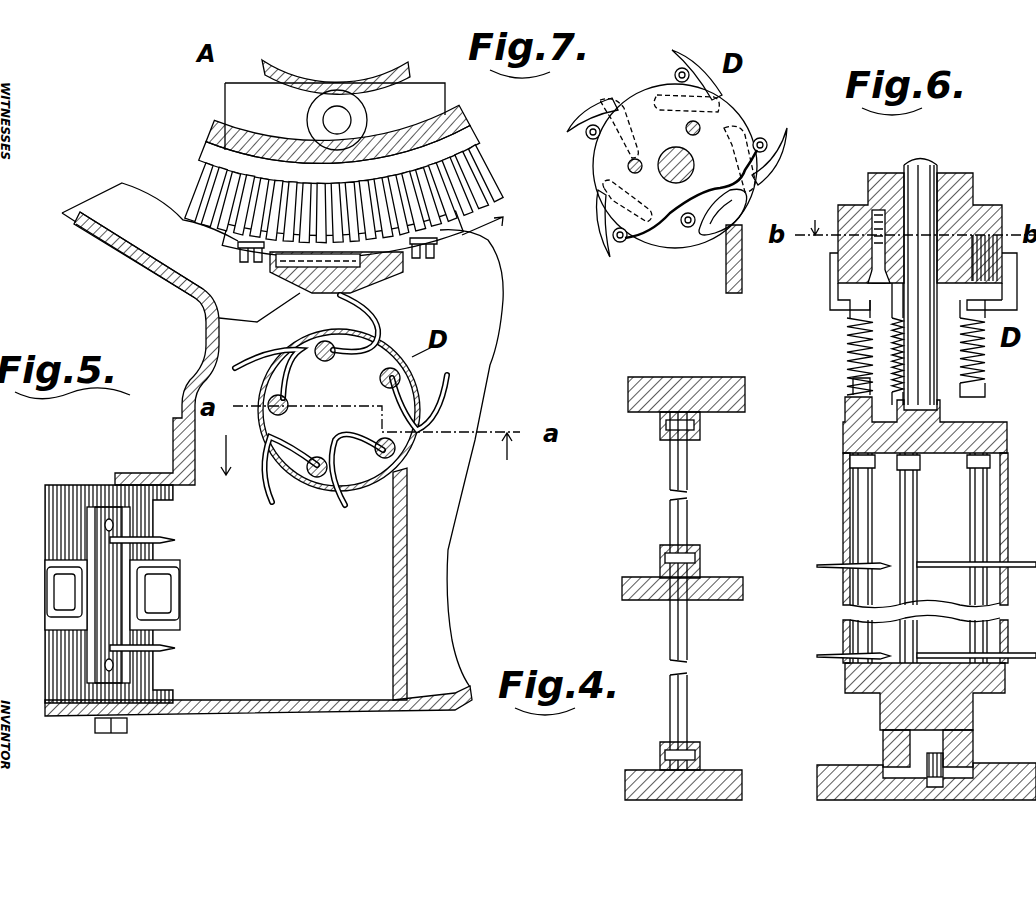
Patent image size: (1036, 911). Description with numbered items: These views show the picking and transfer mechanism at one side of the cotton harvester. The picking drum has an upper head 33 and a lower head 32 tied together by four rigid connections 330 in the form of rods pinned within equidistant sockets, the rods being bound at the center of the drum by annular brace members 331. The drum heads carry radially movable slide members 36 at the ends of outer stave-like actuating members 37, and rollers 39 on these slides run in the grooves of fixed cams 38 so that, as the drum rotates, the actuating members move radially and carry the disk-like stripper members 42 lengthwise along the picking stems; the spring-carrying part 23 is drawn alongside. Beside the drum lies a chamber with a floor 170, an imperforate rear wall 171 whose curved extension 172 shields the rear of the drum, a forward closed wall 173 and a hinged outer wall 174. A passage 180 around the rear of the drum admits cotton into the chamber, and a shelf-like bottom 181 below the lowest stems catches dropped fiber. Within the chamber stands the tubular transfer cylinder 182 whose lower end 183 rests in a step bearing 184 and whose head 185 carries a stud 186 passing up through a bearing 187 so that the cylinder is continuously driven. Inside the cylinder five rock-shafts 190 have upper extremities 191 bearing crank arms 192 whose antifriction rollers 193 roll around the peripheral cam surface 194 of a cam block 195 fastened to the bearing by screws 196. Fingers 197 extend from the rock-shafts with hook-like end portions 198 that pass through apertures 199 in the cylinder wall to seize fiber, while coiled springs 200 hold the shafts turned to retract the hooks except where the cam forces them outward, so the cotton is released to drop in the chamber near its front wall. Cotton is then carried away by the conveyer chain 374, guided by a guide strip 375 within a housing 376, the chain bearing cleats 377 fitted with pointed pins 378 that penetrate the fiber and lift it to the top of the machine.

In FIG. 5, the comb segment 23 is at (208, 162).
In FIG. 5, the slide members 36 is at (433, 103).
In FIG. 5, the stave-like actuating members 37 is at (238, 246).
In FIG. 5, the fixed cams 38 is at (296, 89).
In FIG. 5, the rollers 39 is at (362, 123).
In FIG. 5, the stripper members 42 is at (392, 276).
In FIG. 5, the floors or bottoms 170 is at (304, 610).
In FIG. 6, the floors or bottoms 170 is at (817, 805).
In FIG. 5, the rear walls 171 is at (205, 333).
In FIG. 5, the extensions 172 is at (140, 258).
In FIG. 5, the closed wall 173 is at (410, 547).
In FIG. 7, the closed wall 173 is at (733, 293).
In FIG. 5, the outer walls 174 is at (300, 715).
In FIG. 5, the passage 180 is at (141, 250).
In FIG. 5, the bottom or shelf-like portion 181 is at (100, 200).
In FIG. 5, the drum or cylinder 182 is at (300, 490).
In FIG. 7, the drum or cylinder 182 is at (706, 228).
In FIG. 6, the drum or cylinder 182 is at (843, 507).
In FIG. 6, the lower ends 183 is at (877, 700).
In FIG. 6, the step bearings 184 is at (913, 757).
In FIG. 6, the heads 185 is at (843, 424).
In FIG. 6, the studs or stems 186 is at (943, 148).
In FIG. 7, the bearings 187 is at (692, 160).
In FIG. 6, the bearings 187 is at (950, 198).
In FIG. 6, the rock-shafts 190 is at (977, 520).
In FIG. 6, the upper extremities of rock-shafts 191 is at (848, 383).
In FIG. 7, the crank arms 192 is at (668, 240).
In FIG. 6, the crank arms 192 is at (833, 312).
In FIG. 7, the antifriction rollers 193 is at (605, 212).
In FIG. 6, the antifriction rollers 193 is at (830, 279).
In FIG. 7, the peripheral cam surface 194 is at (757, 197).
In FIG. 6, the peripheral cam surface 194 is at (990, 207).
In FIG. 7, the cam block or member 195 is at (645, 101).
In FIG. 6, the cam block or member 195 is at (840, 249).
In FIG. 7, the screws 196 is at (687, 129).
In FIG. 6, the screws 196 is at (873, 208).
In FIG. 5, the fingers 197 is at (368, 362).
In FIG. 6, the fingers 197 is at (830, 577).
In FIG. 5, the hook-like end portions 198 is at (358, 307).
In FIG. 5, the apertures 199 is at (345, 505).
In FIG. 6, the springs 200 is at (850, 346).
In FIG. 4, the lower head or member 32 is at (625, 779).
In FIG. 4, the upper head or member 33 is at (666, 377).
In FIG. 4, the rigid connections 330 is at (688, 517).
In FIG. 4, the annular brace members 331 is at (623, 587).
In FIG. 5, the conveyer chain 374 is at (43, 572).
In FIG. 5, the guide strip or member 375 is at (45, 632).
In FIG. 5, the housing 376 is at (70, 485).
In FIG. 5, the cleats or plates 377 is at (118, 668).
In FIG. 5, the pins or fingers 378 is at (175, 541).